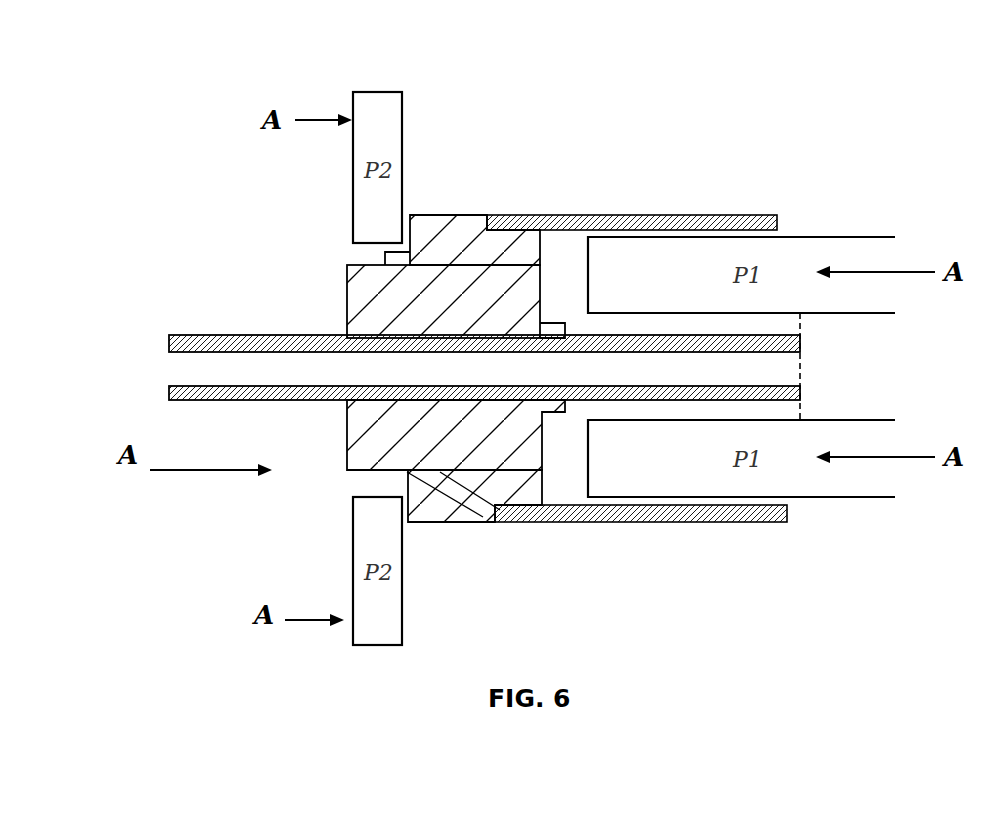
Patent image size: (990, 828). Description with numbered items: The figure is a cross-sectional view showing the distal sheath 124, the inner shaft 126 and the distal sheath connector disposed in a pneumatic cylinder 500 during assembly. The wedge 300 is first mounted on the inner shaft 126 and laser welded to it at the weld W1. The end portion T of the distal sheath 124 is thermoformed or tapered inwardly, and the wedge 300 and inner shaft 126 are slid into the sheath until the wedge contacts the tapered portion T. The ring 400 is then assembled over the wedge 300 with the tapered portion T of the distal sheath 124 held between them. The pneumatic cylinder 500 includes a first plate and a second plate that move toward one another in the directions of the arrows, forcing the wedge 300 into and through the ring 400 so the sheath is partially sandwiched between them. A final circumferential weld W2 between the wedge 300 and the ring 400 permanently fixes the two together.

The distal sheath 124 is at (723, 215).
The inner shaft 126 is at (228, 335).
The wedge 300 is at (347, 275).
The ring 400 is at (438, 215).
The pneumatic cylinder 500 is at (630, 492).
The end portion T is at (495, 215).
The weld W1 is at (585, 326).
The final weld W2 is at (350, 478).